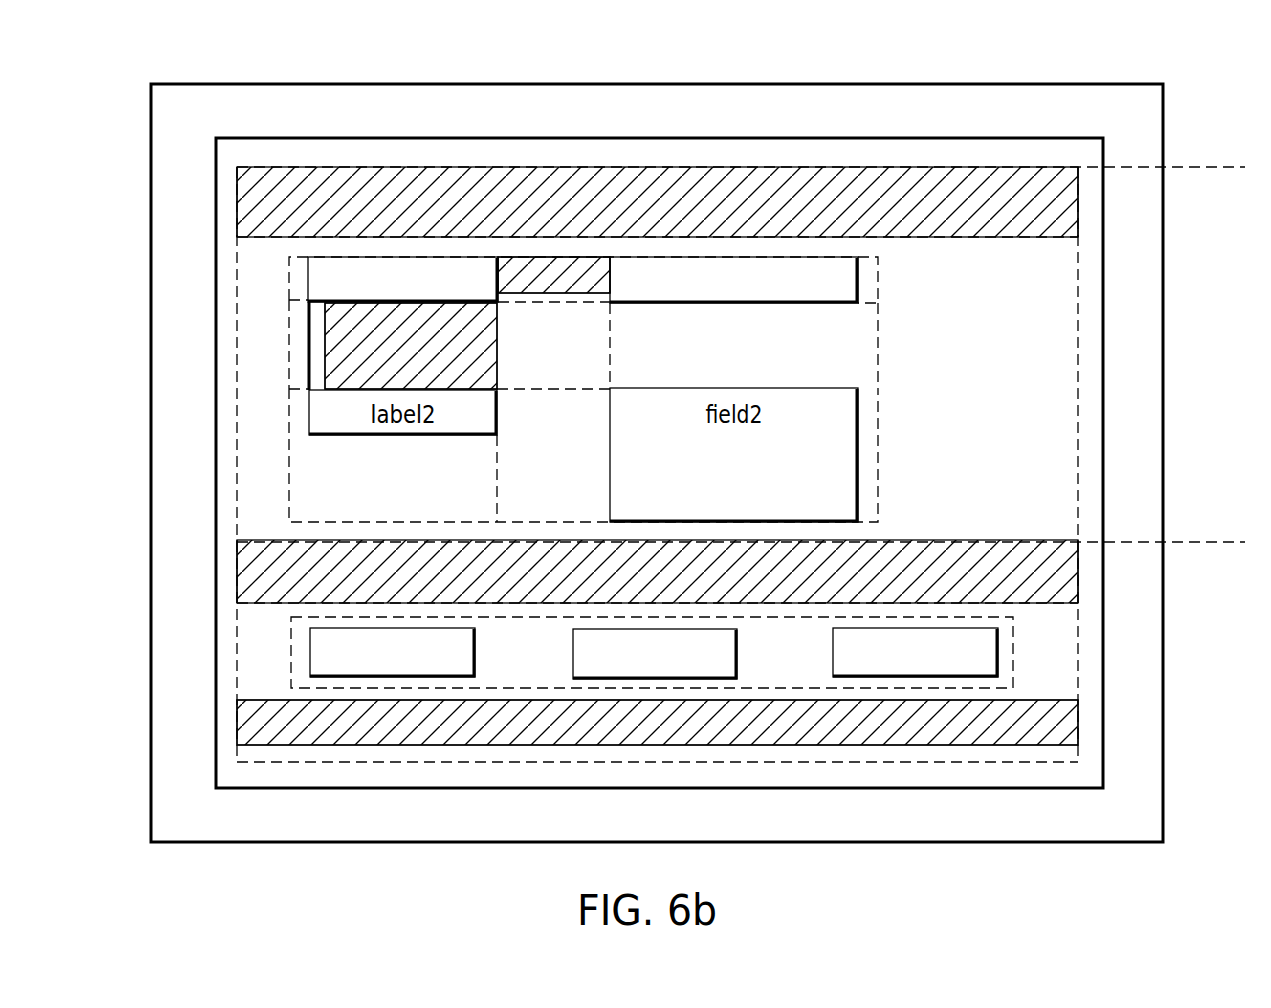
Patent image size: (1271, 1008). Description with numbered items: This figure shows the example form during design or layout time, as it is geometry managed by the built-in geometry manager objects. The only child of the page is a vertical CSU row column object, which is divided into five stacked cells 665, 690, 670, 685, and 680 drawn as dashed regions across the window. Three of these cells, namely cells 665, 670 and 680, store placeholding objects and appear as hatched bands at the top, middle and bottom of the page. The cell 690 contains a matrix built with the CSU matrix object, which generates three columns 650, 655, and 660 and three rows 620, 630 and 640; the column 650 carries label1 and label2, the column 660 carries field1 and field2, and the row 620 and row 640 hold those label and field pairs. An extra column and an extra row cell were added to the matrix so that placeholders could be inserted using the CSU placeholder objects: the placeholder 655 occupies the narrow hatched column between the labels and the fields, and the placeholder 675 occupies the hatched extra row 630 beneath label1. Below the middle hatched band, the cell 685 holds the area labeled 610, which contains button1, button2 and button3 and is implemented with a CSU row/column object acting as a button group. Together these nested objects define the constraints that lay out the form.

The button group area 610 is at (544, 665).
The row 620 is at (868, 282).
The row 630 is at (858, 343).
The row 640 is at (865, 452).
The column 650 is at (403, 263).
The placeholder 655 is at (555, 262).
The column 660 is at (684, 268).
The cell 665 is at (1055, 207).
The cell 670 is at (1050, 568).
The placeholder 675 is at (480, 345).
The cell 680 is at (1055, 722).
The cell 685 is at (1053, 658).
The cell 690 is at (1050, 388).